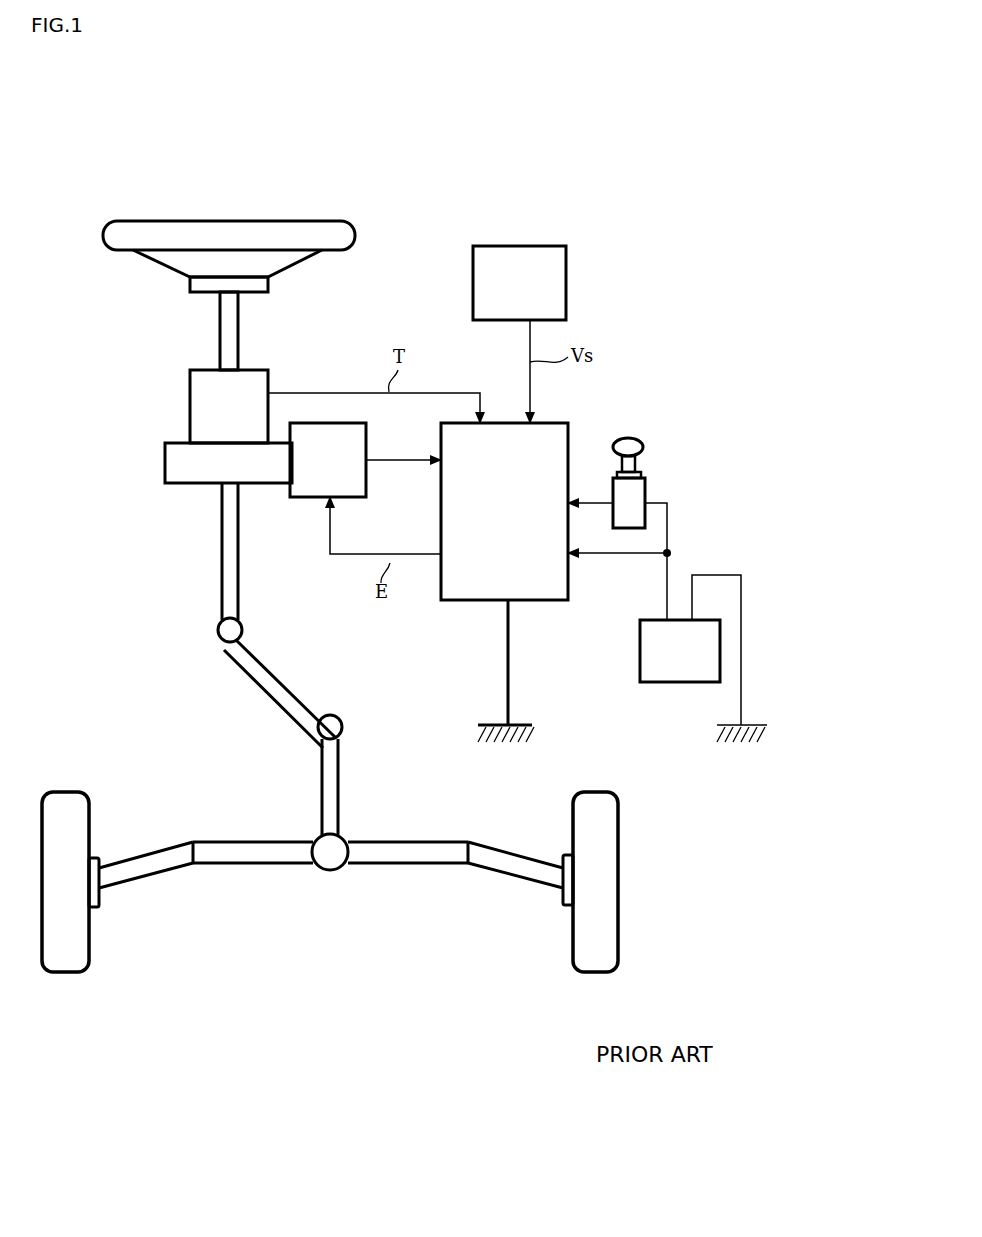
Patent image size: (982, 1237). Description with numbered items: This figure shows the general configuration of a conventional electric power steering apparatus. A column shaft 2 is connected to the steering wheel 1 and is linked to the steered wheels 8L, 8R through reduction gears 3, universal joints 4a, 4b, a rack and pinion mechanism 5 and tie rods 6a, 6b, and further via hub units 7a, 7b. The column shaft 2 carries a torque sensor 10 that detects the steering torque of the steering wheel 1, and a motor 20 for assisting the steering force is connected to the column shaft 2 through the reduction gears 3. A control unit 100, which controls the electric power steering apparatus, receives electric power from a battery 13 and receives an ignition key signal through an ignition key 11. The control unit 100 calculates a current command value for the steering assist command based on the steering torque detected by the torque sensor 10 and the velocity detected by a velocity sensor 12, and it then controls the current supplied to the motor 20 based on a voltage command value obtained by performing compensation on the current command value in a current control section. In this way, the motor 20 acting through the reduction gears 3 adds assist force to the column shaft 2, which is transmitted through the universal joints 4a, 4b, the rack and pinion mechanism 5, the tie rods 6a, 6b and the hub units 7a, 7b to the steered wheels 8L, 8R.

The steering wheel 1 is at (355, 228).
The column shaft 2 is at (220, 334).
The reduction gears 3 is at (165, 467).
The universal joint 4a is at (218, 631).
The universal joint 4b is at (318, 732).
The rack and pinion mechanism 5 is at (341, 835).
The tie rod 6a is at (130, 862).
The tie rod 6b is at (498, 850).
The hub unit 7a is at (99, 903).
The hub unit 7b is at (563, 900).
The steered wheel 8L is at (89, 958).
The steered wheel 8R is at (573, 958).
The torque sensor 10 is at (190, 400).
The ignition key 11 is at (645, 447).
The velocity sensor 12 is at (566, 254).
The battery 13 is at (640, 644).
The motor 20 is at (366, 430).
The control unit 100 is at (570, 430).